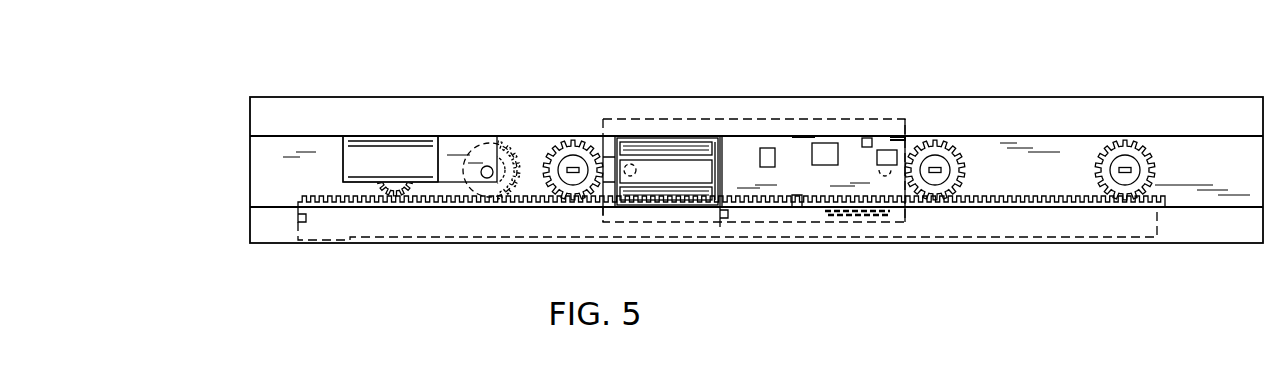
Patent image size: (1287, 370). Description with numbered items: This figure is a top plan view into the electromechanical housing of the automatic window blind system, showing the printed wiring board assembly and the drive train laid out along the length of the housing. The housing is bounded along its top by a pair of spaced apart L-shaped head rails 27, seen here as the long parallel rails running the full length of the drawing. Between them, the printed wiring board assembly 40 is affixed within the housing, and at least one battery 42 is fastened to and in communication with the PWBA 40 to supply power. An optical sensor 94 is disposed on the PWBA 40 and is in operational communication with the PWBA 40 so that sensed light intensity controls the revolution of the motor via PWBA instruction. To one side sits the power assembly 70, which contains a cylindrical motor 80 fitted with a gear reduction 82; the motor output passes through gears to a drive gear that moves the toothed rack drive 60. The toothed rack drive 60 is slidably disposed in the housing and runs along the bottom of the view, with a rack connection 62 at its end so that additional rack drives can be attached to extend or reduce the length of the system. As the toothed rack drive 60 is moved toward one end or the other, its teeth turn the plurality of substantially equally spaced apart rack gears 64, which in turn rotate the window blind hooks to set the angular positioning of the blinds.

The head rail 27 is at (1148, 112).
The printed wiring board assembly 40 is at (742, 150).
The battery 42 is at (665, 150).
The toothed rack drive 60 is at (333, 223).
The rack connection 62 is at (296, 222).
The rack gear 64 is at (395, 188).
The power assembly 70 is at (425, 136).
The cylindrical motor 80 is at (378, 156).
The gear reduction 82 is at (465, 136).
The optical sensor 94 is at (887, 218).